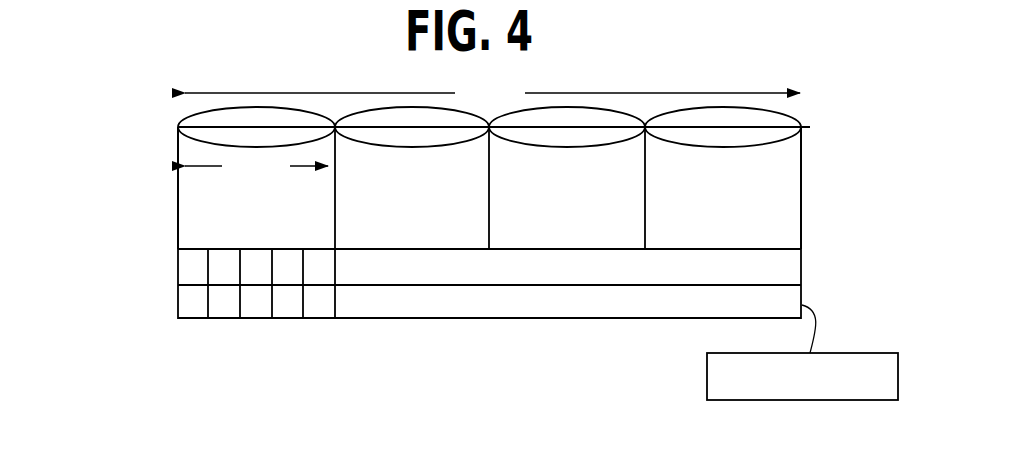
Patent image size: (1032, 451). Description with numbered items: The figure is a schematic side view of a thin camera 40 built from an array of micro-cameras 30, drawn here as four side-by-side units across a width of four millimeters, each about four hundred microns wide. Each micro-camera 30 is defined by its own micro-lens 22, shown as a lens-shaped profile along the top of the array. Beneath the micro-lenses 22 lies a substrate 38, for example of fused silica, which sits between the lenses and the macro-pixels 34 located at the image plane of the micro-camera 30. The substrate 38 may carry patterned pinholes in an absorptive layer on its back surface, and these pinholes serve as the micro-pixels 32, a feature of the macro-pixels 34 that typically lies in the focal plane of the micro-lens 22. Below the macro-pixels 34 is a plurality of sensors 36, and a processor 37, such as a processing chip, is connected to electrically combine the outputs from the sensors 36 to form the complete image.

The thin camera 40 is at (78, 136).
The micro-camera 30 is at (152, 98).
The micro-lens 22 is at (178, 127).
The substrate 38 is at (780, 182).
The micro-pixels 32 is at (800, 250).
The macro-pixels 34 is at (203, 275).
The sensors 36 is at (221, 298).
The processor 37 is at (737, 400).